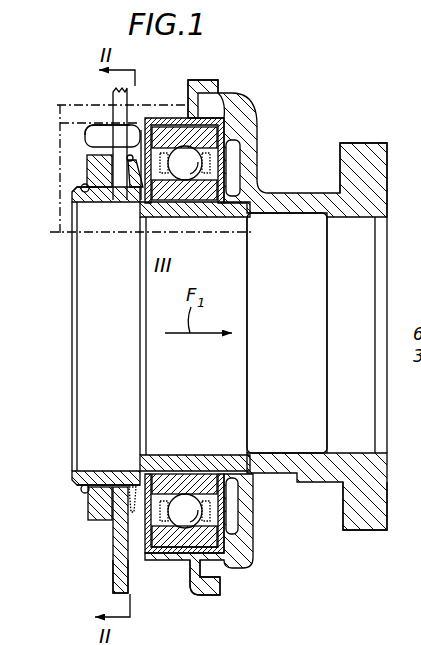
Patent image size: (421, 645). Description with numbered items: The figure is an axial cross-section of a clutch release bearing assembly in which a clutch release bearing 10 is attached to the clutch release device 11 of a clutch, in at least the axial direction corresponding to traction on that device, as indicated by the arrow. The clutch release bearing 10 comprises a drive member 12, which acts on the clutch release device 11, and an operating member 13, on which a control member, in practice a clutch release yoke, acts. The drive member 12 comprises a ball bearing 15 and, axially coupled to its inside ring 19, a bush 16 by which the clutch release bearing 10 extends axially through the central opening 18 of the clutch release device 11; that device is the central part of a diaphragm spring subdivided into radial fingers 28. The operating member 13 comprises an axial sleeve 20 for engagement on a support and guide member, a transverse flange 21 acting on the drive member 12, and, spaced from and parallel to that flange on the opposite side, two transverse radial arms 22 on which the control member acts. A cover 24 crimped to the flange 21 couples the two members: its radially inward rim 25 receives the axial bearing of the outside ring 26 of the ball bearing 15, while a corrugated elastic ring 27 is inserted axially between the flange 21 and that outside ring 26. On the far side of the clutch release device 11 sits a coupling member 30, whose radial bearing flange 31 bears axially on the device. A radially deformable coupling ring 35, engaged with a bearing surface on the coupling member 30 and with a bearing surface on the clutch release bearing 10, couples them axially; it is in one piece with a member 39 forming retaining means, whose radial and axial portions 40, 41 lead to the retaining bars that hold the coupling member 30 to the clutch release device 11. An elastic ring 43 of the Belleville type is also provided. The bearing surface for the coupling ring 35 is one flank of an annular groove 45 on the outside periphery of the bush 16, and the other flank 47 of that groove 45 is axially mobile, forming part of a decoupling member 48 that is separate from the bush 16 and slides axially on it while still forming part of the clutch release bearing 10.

The clutch release bearing 10 is at (310, 168).
The clutch release device 11 is at (111, 99).
The drive member 12 is at (125, 210).
The operating member 13 is at (262, 182).
The ball bearing 15 is at (217, 120).
The bush 16 is at (85, 212).
The central opening 18 is at (118, 483).
The inside ring 19 is at (207, 190).
The axial sleeve 20 is at (295, 205).
The transverse flange 21 is at (243, 553).
The transverse radial arms 22 is at (378, 142).
The cover 24 is at (196, 596).
The rim 25 is at (160, 547).
The outside ring 26 is at (207, 137).
The corrugated elastic ring 27 is at (240, 482).
The radial fingers 28 is at (117, 528).
The coupling member 30 is at (88, 517).
The radial bearing flange 31 is at (112, 498).
The coupling ring 35 is at (83, 183).
The retaining member 39 is at (81, 127).
The radial portion 40 is at (82, 143).
The axial portion 41 is at (113, 170).
The elastic ring 43 is at (142, 166).
The annular groove 45 is at (88, 492).
The other flank 47 is at (95, 194).
The decoupling member 48 is at (150, 174).